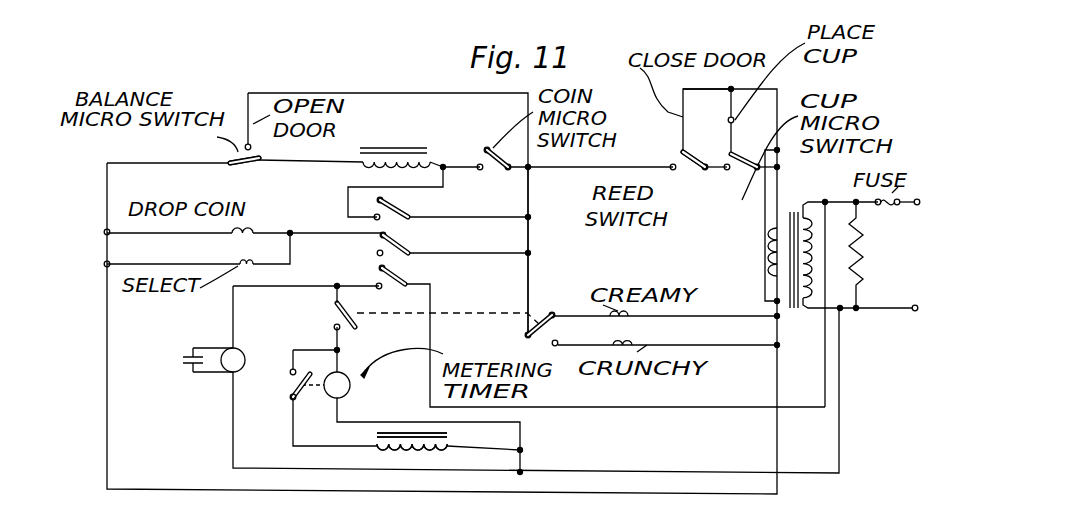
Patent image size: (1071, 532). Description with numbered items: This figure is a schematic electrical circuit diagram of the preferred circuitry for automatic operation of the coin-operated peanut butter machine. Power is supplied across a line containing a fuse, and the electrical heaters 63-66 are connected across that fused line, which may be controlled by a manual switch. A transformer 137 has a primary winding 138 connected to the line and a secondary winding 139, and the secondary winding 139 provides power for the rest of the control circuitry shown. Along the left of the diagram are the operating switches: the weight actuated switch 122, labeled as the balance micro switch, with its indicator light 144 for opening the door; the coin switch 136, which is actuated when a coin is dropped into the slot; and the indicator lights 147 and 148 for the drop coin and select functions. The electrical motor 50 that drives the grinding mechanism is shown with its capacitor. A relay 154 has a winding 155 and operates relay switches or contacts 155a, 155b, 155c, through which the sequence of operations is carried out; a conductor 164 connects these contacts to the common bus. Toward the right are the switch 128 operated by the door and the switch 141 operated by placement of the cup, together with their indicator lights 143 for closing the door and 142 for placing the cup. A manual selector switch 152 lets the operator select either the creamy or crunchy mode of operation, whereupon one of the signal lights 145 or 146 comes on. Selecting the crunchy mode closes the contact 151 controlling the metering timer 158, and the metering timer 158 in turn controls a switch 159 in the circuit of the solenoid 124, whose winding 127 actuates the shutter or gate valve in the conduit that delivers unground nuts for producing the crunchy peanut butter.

The indicator light 144 is at (252, 117).
The weight actuated switch 122 is at (248, 160).
The indicator light 147 is at (258, 222).
The indicator light 148 is at (238, 258).
The electrical motor 50 is at (254, 336).
The switch 159 is at (293, 386).
The metering timer 158 is at (350, 387).
The solenoid 124 is at (456, 438).
The winding 127 is at (437, 452).
The contact 151 is at (337, 311).
The winding 155 is at (362, 167).
The relay 154 is at (415, 146).
The relay contact 155a is at (398, 210).
The relay contact 155b is at (398, 243).
The relay contact 155c is at (396, 273).
The coin switch 136 is at (504, 168).
The conductor 164 is at (530, 233).
The manual selector switch 152 is at (542, 310).
The signal light 145 is at (626, 311).
The signal light 146 is at (642, 338).
The indicator light 143 is at (667, 148).
The indicator light 142 is at (728, 121).
The door switch 128 is at (702, 172).
The cup switch 141 is at (742, 172).
The transformer 137 is at (791, 202).
The secondary winding 139 is at (773, 262).
The primary winding 138 is at (812, 234).
The electrical heaters 63-66 is at (883, 253).